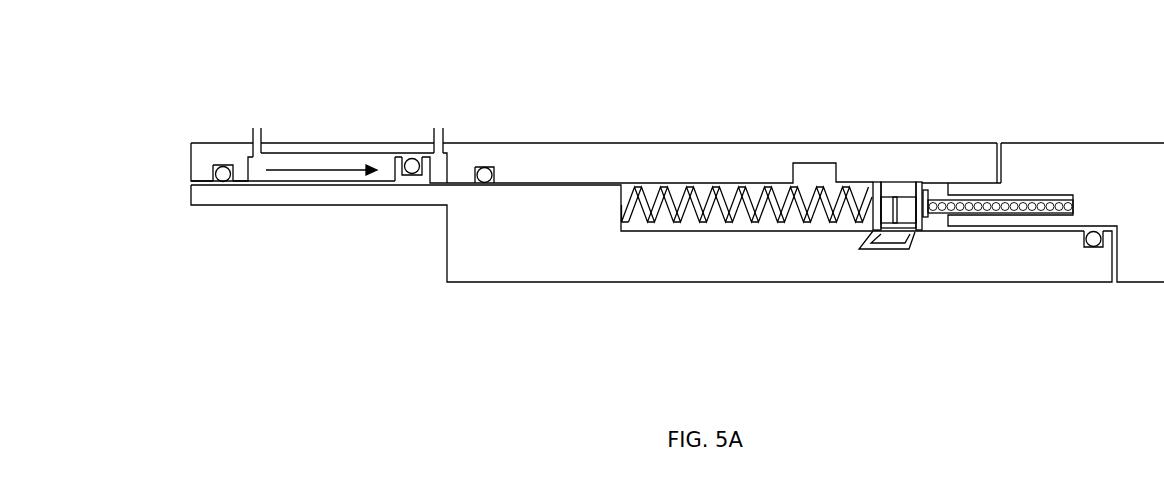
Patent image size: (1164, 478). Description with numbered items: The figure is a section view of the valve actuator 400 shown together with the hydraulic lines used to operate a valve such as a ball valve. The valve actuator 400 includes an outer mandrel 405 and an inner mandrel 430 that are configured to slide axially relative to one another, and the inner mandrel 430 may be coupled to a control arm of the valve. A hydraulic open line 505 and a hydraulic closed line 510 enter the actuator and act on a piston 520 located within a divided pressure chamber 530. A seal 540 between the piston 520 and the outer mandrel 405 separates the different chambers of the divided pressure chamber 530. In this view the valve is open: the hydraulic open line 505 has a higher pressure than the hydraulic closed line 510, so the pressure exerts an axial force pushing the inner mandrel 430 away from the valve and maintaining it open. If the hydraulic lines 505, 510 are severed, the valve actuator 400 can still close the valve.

The valve actuator 400 is at (628, 98).
The outer mandrel 405 is at (672, 170).
The inner mandrel 430 is at (522, 260).
The hydraulic open line 505 is at (258, 130).
The hydraulic closed line 510 is at (440, 129).
The piston 520 is at (410, 184).
The divided pressure chamber 530 is at (334, 158).
The seal 540 is at (410, 158).